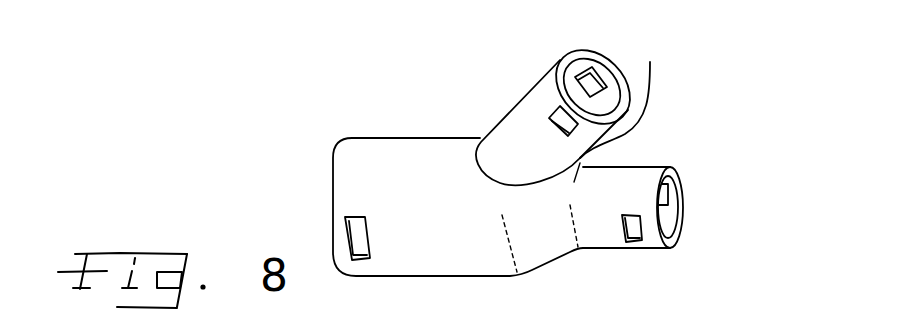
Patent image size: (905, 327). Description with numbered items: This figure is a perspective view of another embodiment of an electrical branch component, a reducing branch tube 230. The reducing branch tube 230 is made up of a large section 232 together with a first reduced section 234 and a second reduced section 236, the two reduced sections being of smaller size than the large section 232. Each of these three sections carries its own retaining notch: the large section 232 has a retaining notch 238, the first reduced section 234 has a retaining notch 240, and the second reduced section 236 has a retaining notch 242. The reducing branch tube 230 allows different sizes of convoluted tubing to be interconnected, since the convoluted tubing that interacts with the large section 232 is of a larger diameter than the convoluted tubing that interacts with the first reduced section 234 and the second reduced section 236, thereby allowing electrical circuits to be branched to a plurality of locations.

The reducing branch tube 230 is at (316, 97).
The large section 232 is at (437, 135).
The first reduced section 234 is at (521, 101).
The second reduced section 236 is at (650, 167).
The retaining notch 238 is at (347, 241).
The retaining notch 240 is at (605, 79).
The retaining notch 242 is at (643, 228).